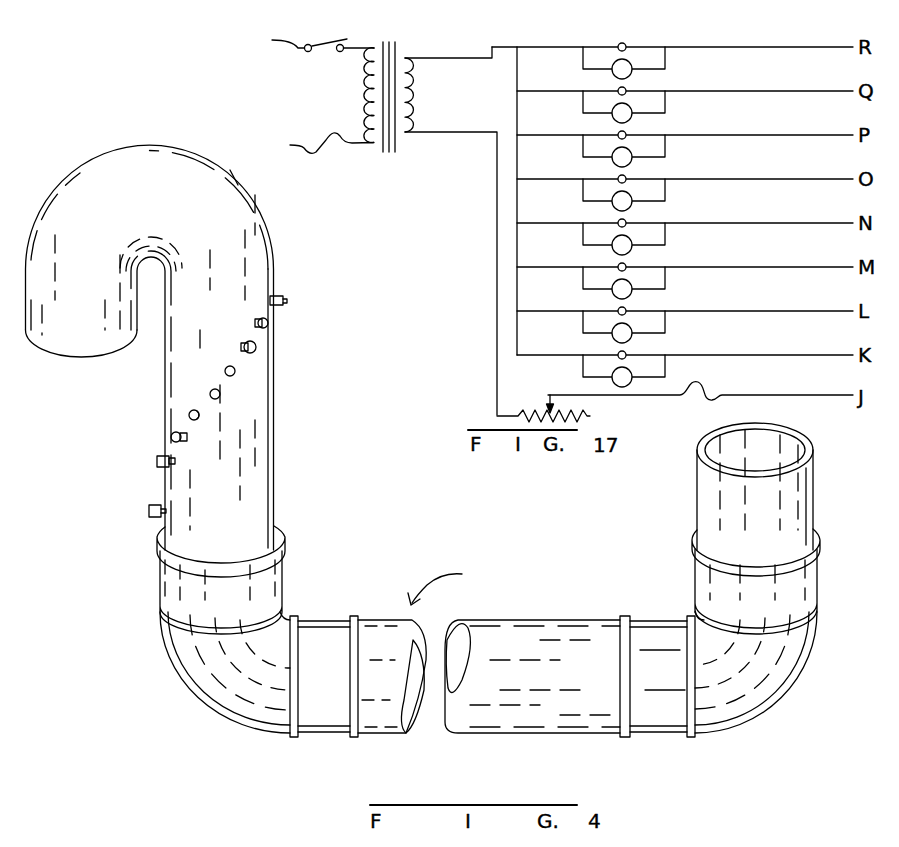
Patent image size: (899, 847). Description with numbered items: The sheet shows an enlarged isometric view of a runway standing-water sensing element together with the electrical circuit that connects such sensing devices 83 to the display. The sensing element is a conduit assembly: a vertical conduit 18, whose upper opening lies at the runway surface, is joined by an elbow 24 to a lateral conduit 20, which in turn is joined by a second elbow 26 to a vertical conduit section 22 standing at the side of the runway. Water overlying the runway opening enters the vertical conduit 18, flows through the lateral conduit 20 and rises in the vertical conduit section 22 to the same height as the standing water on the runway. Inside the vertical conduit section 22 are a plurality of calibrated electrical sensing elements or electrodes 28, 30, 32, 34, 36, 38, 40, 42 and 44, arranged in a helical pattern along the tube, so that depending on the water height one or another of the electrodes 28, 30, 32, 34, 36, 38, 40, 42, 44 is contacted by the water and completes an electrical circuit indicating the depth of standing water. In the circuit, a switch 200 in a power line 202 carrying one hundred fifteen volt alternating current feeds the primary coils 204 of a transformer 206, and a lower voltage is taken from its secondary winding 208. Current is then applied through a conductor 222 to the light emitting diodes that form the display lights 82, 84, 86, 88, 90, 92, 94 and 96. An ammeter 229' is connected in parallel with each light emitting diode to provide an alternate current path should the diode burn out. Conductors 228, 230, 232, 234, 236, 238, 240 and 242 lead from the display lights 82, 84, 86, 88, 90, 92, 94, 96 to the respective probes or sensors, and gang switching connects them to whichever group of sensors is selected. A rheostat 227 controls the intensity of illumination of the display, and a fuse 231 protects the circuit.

In FIG. 4, the vertical conduit 18 is at (805, 487).
In FIG. 4, the lateral conduit 20 is at (548, 626).
In FIG. 4, the vertical conduit section 22 is at (278, 475).
In FIG. 4, the elbow 24 is at (790, 677).
In FIG. 4, the elbow 26 is at (187, 678).
In FIG. 4, the electrode 28 is at (148, 509).
In FIG. 4, the electrode 30 is at (156, 461).
In FIG. 4, the electrode 32 is at (171, 438).
In FIG. 4, the electrode 34 is at (189, 416).
In FIG. 4, the electrode 36 is at (220, 394).
In FIG. 4, the electrode 38 is at (235, 371).
In FIG. 4, the electrode 40 is at (256, 348).
In FIG. 4, the electrode 42 is at (268, 324).
In FIG. 4, the electrode 44 is at (287, 301).
In FIG. 4, the sensing device 83 is at (446, 583).
In FIG. 17, the display light 82 is at (619, 352).
In FIG. 17, the display light 84 is at (619, 308).
In FIG. 17, the display light 86 is at (619, 264).
In FIG. 17, the display light 88 is at (619, 220).
In FIG. 17, the display light 90 is at (619, 176).
In FIG. 17, the display light 92 is at (619, 132).
In FIG. 17, the display light 94 is at (619, 88).
In FIG. 17, the display light 96 is at (619, 43).
In FIG. 17, the switch 200 is at (337, 42).
In FIG. 17, the power line 202 is at (272, 35).
In FIG. 17, the primary coils 204 is at (366, 96).
In FIG. 17, the transformer 206 is at (381, 36).
In FIG. 17, the secondary winding 208 is at (417, 91).
In FIG. 17, the conductor 222 is at (511, 42).
In FIG. 17, the rheostat 227 is at (583, 415).
In FIG. 17, the conductor 228 is at (765, 357).
In FIG. 17, the ammeter 229' is at (622, 220).
In FIG. 17, the conductor 230 is at (765, 313).
In FIG. 17, the fuse 231 is at (694, 389).
In FIG. 17, the conductor 232 is at (762, 269).
In FIG. 17, the conductor 234 is at (757, 225).
In FIG. 17, the conductor 236 is at (765, 181).
In FIG. 17, the conductor 238 is at (765, 137).
In FIG. 17, the conductor 240 is at (762, 93).
In FIG. 17, the conductor 242 is at (757, 49).